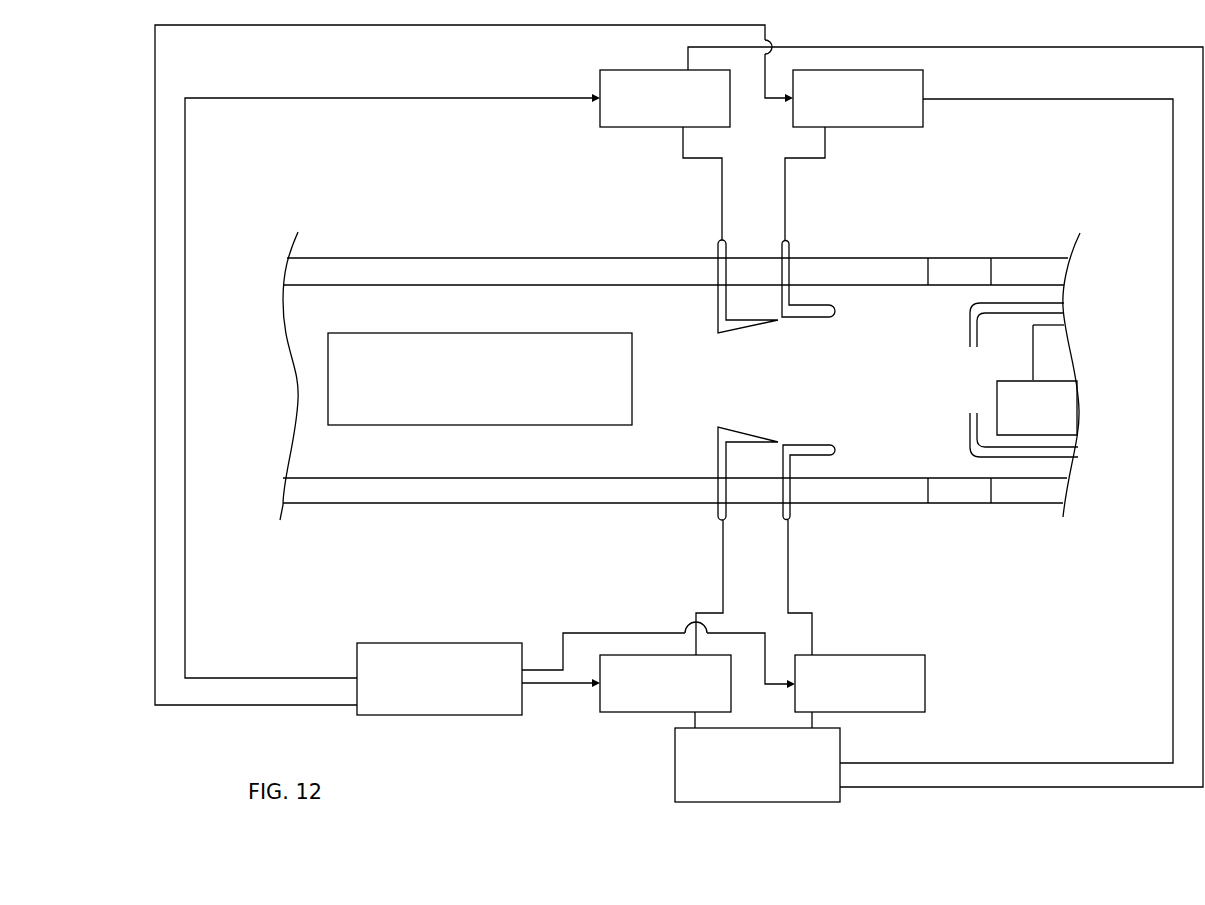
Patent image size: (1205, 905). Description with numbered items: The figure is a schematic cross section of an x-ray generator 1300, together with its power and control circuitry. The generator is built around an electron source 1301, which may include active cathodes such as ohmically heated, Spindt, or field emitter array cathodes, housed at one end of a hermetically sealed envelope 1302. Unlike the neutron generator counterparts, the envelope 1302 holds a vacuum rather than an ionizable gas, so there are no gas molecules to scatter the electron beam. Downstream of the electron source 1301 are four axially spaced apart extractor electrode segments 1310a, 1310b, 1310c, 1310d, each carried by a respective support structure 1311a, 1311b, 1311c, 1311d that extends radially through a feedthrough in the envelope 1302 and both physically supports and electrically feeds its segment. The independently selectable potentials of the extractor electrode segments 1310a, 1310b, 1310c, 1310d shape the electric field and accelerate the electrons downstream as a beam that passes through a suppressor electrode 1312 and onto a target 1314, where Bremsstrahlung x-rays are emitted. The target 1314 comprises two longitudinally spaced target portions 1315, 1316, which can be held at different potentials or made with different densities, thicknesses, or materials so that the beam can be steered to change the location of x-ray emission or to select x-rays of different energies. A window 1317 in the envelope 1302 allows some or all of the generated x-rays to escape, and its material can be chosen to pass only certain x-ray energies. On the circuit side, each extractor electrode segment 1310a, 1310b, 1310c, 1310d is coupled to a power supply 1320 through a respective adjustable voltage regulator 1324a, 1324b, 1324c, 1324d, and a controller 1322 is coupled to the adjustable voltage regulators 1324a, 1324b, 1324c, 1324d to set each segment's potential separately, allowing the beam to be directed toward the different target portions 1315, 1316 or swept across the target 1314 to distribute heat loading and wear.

The x-ray generator 1300 is at (277, 152).
The electron source 1301 is at (462, 333).
The envelope 1302 is at (287, 268).
The extractor electrode segment 1310a is at (718, 323).
The extractor electrode segment 1310b is at (798, 305).
The extractor electrode segment 1310c is at (718, 437).
The extractor electrode segment 1310d is at (805, 455).
The support structure 1311a is at (718, 267).
The support structure 1311b is at (790, 263).
The support structure 1311c is at (717, 497).
The support structure 1311d is at (793, 498).
The suppressor electrode 1312 is at (977, 303).
The target 1314 is at (1050, 325).
The target portion 1315 is at (1062, 353).
The target portion 1316 is at (1072, 410).
The window 1317 is at (958, 488).
The power supply 1320 is at (675, 802).
The controller 1322 is at (438, 715).
The adjustable voltage regulator 1324a is at (600, 71).
The adjustable voltage regulator 1324b is at (923, 127).
The adjustable voltage regulator 1324c is at (599, 712).
The adjustable voltage regulator 1324d is at (925, 712).